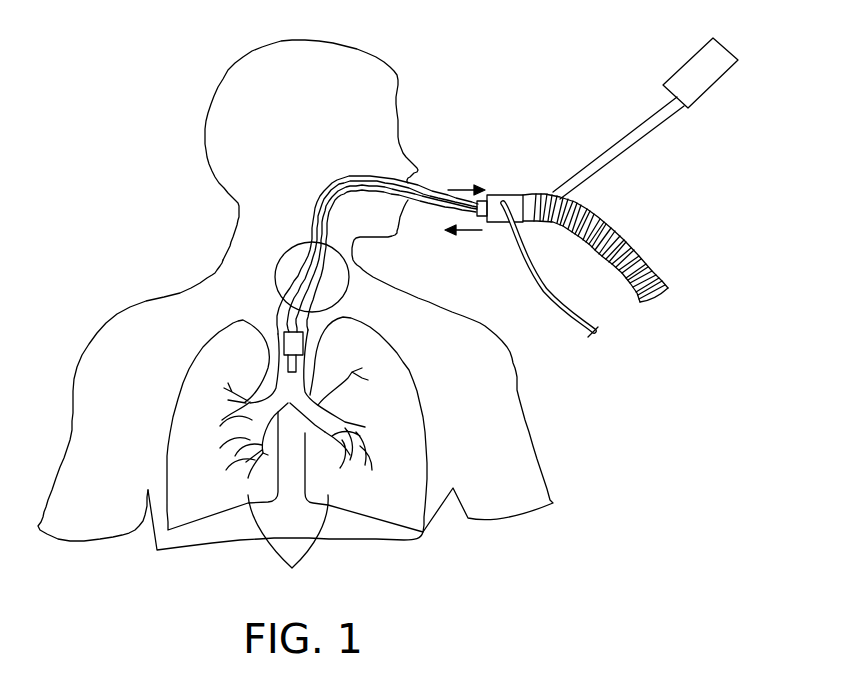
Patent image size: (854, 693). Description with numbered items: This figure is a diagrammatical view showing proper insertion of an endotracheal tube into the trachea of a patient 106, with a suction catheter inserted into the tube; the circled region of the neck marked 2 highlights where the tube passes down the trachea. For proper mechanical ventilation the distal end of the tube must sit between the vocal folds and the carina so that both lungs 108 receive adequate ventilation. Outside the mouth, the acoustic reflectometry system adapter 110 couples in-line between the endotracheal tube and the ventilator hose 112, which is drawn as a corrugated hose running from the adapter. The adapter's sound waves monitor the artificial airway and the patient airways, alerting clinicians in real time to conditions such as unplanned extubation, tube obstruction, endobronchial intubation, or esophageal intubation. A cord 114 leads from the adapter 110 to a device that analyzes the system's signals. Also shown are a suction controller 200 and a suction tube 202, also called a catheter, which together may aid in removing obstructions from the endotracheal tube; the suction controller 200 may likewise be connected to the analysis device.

The tracheal tube system 2 is at (277, 272).
The patient 106 is at (375, 75).
The lungs 108 is at (292, 568).
The acoustic reflectometry system adapter 110 is at (512, 195).
The ventilator hose 112 is at (608, 220).
The cord 114 is at (557, 310).
The suction controller 200 is at (712, 92).
The suction tube 202 is at (620, 135).